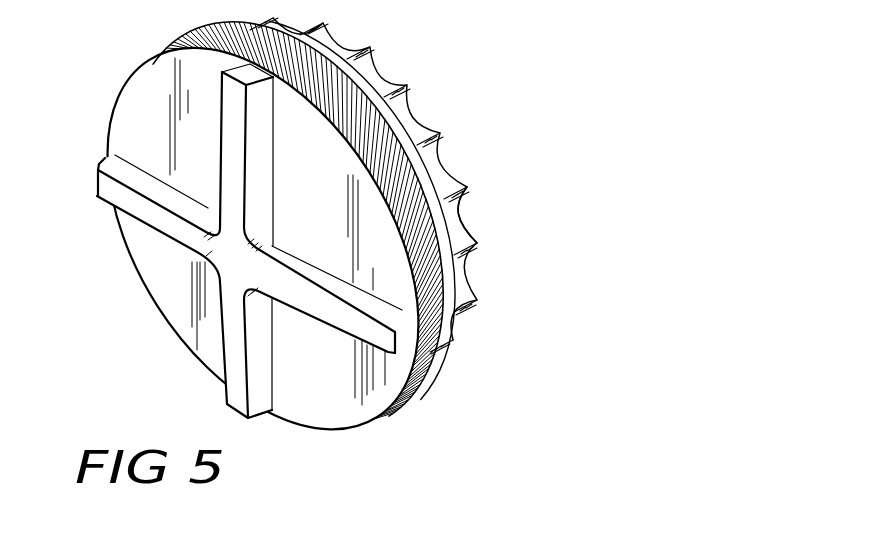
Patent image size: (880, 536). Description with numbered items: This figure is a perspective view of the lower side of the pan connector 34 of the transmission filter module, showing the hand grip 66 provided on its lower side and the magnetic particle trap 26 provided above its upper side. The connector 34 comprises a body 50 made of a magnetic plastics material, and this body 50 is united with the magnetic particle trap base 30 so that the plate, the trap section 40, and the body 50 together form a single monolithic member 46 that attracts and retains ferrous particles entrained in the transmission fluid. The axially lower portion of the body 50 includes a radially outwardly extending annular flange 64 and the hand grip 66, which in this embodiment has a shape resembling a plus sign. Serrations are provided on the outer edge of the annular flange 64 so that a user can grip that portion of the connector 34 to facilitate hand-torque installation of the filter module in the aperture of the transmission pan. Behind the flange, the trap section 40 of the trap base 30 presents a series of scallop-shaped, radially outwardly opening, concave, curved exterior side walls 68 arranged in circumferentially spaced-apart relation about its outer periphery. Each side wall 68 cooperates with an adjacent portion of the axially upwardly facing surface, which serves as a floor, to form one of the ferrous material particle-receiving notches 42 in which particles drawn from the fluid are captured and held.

The magnetic particle trap 26 is at (430, 115).
The magnetic particle trap base 30 is at (472, 320).
The connector 34 is at (384, 426).
The trap section 40 is at (481, 243).
The ferrous material particle-receiving notches 42 is at (460, 226).
The monolithic member 46 is at (139, 304).
The body 50 is at (432, 390).
The annular flange 64 is at (146, 59).
The hand grip 66 is at (121, 191).
The exterior side walls 68 is at (373, 83).